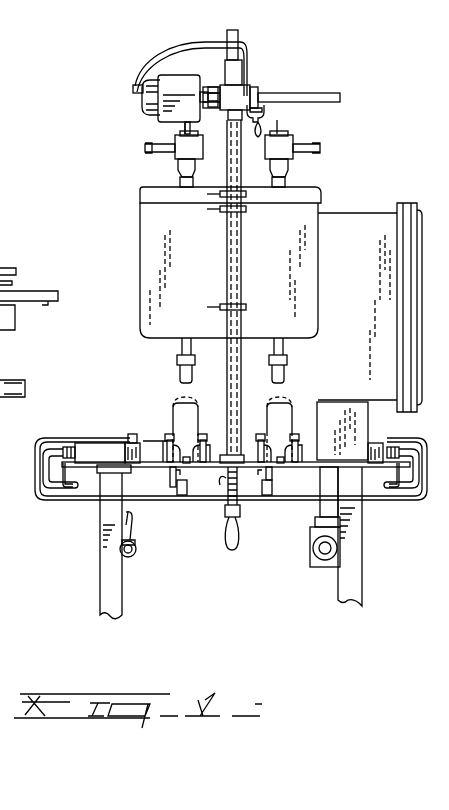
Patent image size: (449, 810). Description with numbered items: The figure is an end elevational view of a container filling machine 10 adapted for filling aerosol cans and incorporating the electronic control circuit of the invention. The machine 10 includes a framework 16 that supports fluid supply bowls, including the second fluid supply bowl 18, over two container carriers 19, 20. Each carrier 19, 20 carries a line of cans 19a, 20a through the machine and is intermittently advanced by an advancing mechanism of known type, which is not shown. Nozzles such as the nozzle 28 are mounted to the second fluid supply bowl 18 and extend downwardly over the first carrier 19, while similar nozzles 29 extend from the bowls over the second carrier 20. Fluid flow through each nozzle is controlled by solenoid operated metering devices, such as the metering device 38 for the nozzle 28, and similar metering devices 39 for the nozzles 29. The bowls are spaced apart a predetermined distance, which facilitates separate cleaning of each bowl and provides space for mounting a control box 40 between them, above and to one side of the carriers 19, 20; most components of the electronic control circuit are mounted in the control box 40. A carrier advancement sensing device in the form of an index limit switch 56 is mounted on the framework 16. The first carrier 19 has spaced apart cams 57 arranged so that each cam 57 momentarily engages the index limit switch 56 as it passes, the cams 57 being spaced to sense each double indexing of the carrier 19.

The container filling machine 10 is at (344, 184).
The framework 16 is at (122, 596).
The second fluid supply bowl 18 is at (280, 253).
The first container carrier 19 is at (187, 463).
The first line of cans 19a is at (174, 412).
The second container carrier 20 is at (279, 463).
The second line of cans 20a is at (303, 411).
The nozzle 28 is at (185, 372).
The nozzles over second carrier 29 is at (280, 348).
The solenoid operated metering device 38 is at (190, 148).
The solenoid operated metering devices 39 is at (290, 143).
The control box 40 is at (360, 253).
The index limit switch 56 is at (187, 496).
The cams 57 is at (170, 478).